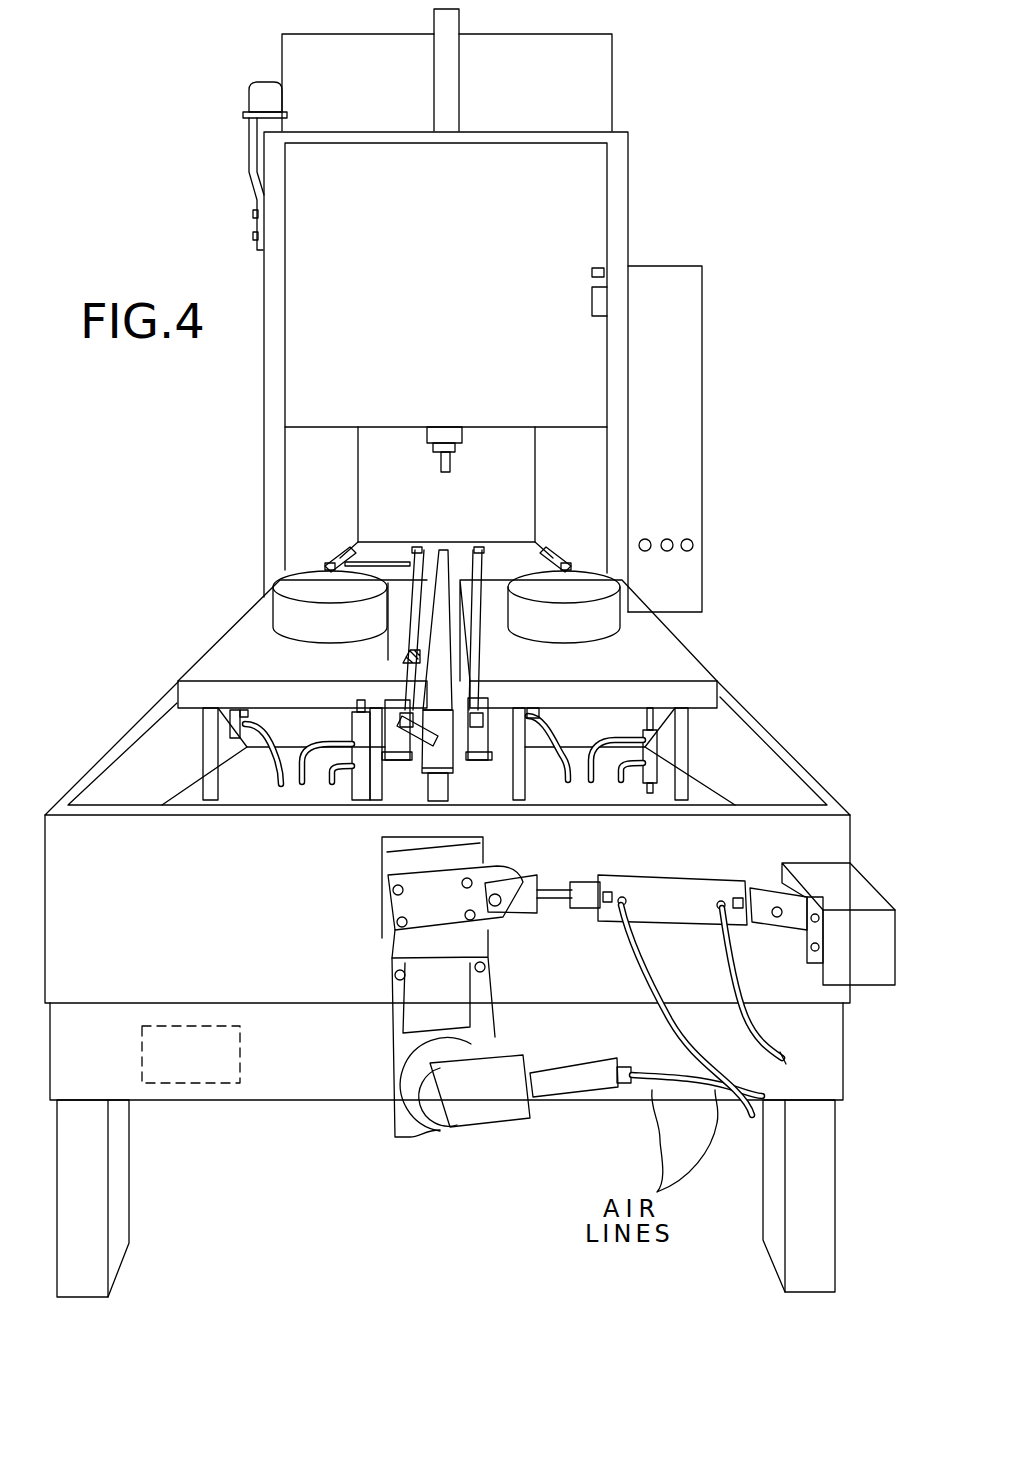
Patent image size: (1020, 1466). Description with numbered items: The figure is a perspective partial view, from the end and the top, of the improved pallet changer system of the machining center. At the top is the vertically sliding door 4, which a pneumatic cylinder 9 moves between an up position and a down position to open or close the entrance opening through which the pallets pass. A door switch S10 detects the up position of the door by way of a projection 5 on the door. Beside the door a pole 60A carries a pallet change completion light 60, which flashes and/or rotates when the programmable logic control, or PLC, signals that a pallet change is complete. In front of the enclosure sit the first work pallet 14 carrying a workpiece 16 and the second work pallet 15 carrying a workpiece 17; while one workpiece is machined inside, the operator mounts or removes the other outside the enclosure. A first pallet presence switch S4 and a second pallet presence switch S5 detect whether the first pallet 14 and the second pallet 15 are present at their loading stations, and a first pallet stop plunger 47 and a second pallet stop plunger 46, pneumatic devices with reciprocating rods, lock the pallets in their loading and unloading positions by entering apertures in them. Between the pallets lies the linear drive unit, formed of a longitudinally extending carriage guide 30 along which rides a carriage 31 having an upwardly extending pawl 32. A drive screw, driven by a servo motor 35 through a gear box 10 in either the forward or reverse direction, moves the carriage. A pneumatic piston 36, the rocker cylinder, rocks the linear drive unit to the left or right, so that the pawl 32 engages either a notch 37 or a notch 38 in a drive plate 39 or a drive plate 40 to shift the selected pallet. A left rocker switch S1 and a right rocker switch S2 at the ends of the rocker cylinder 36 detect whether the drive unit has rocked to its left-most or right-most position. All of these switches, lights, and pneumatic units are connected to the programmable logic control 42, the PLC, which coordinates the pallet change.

The vertically sliding door 4 is at (332, 332).
The pneumatic cylinder 9 is at (452, 53).
The pallet change completion light 60 is at (255, 97).
The pole 60A is at (250, 150).
The projection 5 is at (592, 268).
The door switch S10 is at (600, 303).
The workpiece 16 is at (293, 612).
The workpiece 17 is at (597, 623).
The first work pallet 14 is at (215, 665).
The second work pallet 15 is at (687, 667).
The first pallet presence switch S4 is at (233, 723).
The second pallet presence switch S5 is at (545, 713).
The second pallet stop plunger 46 is at (653, 750).
The first pallet stop plunger 47 is at (300, 780).
The pawl 32 is at (437, 700).
The carriage 31 is at (445, 805).
The drive plate 39 is at (460, 790).
The notch 38 is at (400, 692).
The notch 37 is at (472, 705).
The drive plate 40 is at (330, 766).
The carriage guide 30 is at (427, 790).
The gear box 10 is at (407, 905).
The servo motor 35 is at (410, 1087).
The pneumatic piston 36 is at (700, 895).
The left rocker switch S1 is at (610, 892).
The right rocker switch S2 is at (738, 898).
The programmable logic control 42 is at (212, 1083).
The programmable logic control PLC is at (180, 1083).